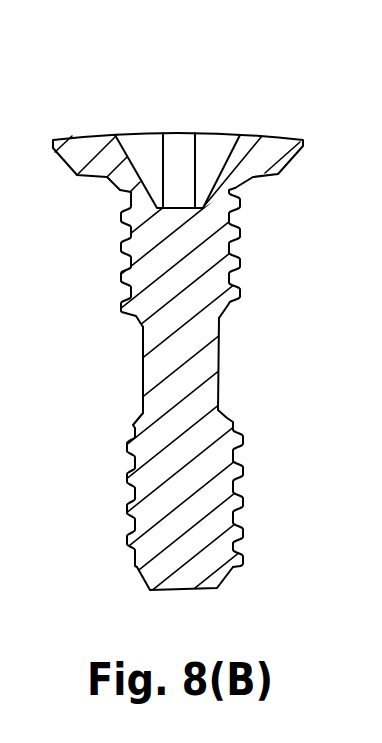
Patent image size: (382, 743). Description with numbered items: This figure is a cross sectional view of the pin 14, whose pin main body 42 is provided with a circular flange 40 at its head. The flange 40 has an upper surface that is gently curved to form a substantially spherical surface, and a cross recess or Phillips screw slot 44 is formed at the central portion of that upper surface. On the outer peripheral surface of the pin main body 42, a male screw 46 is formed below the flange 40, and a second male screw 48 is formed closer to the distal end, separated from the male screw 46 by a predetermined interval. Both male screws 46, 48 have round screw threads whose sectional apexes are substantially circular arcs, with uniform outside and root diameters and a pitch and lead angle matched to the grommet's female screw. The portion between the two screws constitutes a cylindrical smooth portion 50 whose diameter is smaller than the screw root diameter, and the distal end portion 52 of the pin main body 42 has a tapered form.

The pin 14 is at (254, 80).
The circular flange 40 is at (95, 135).
The pin main body 42 is at (226, 363).
The cross recess 44 is at (233, 146).
The male screw 46 is at (127, 282).
The male screw 48 is at (130, 512).
The cylindrical smooth portion 50 is at (143, 355).
The distal end portion 52 is at (140, 577).